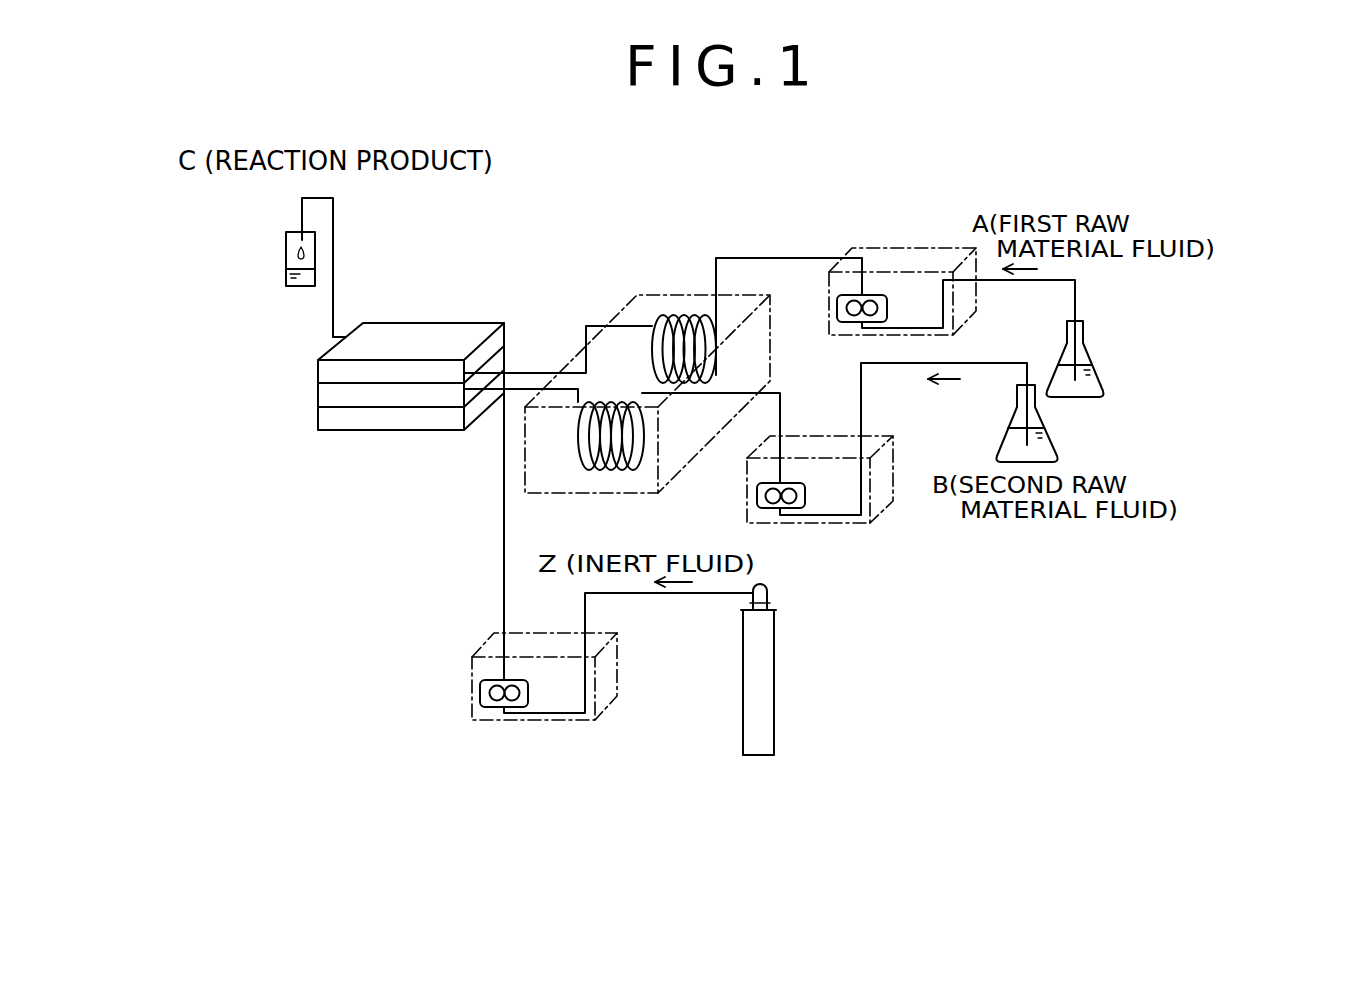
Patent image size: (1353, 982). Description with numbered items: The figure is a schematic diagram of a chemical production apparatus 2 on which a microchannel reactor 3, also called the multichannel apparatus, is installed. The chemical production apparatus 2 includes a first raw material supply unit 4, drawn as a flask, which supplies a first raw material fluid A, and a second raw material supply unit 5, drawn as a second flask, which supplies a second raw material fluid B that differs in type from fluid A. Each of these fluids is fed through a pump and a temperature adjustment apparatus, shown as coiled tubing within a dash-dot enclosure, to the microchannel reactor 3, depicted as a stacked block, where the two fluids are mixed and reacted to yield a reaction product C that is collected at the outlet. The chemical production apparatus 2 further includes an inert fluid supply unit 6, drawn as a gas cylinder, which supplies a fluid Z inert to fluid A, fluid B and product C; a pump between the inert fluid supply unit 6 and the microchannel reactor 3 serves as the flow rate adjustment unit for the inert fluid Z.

The chemical production apparatus 2 is at (786, 196).
The microchannel reactor 3 is at (443, 286).
The first raw material supply unit 4 is at (1095, 385).
The second raw material supply unit 5 is at (1045, 448).
The inert fluid supply unit 6 is at (768, 707).